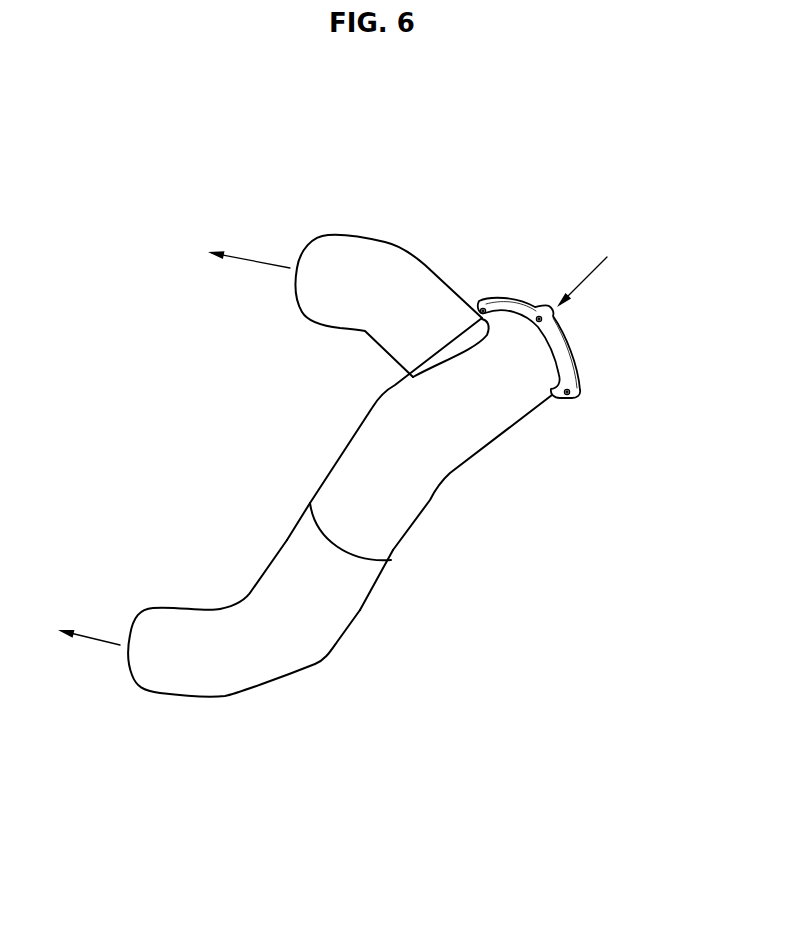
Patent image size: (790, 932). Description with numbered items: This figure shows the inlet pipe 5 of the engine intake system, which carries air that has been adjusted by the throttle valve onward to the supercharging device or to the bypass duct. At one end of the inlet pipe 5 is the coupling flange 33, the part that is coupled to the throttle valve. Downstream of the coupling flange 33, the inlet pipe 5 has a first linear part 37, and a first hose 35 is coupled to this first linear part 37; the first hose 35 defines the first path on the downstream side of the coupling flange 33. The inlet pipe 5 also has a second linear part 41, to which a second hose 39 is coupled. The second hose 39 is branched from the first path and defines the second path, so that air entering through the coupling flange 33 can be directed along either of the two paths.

The inlet pipe 5 is at (412, 492).
The coupling flange 33 is at (577, 373).
The first hose 35 is at (227, 683).
The first linear part 37 is at (400, 562).
The second hose 39 is at (363, 248).
The second linear part 41 is at (423, 258).